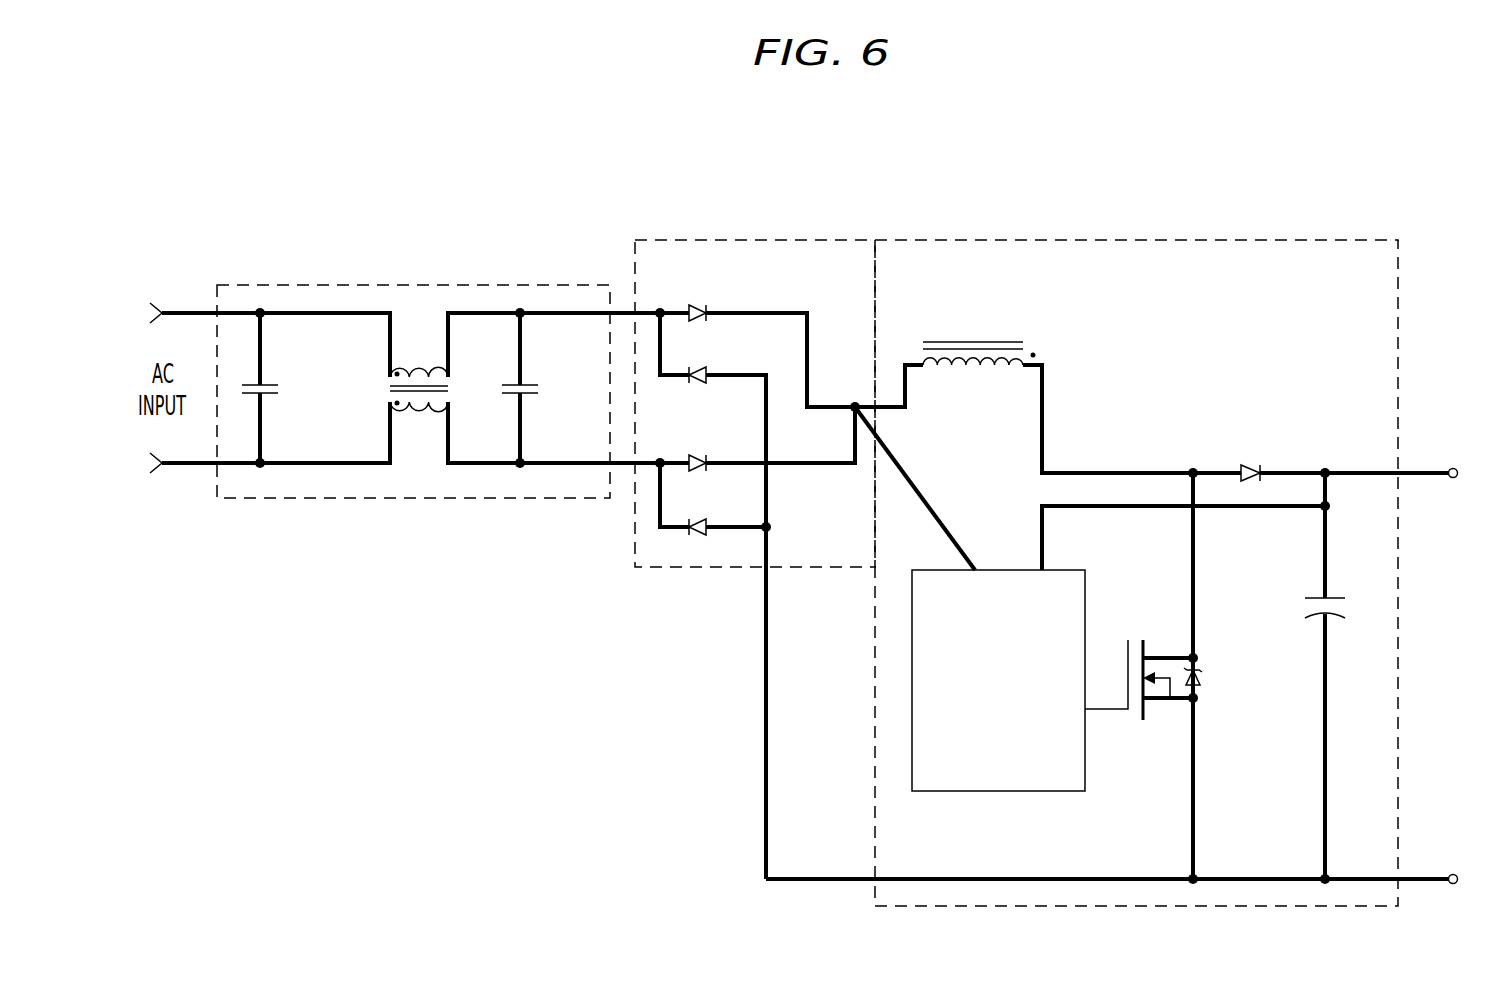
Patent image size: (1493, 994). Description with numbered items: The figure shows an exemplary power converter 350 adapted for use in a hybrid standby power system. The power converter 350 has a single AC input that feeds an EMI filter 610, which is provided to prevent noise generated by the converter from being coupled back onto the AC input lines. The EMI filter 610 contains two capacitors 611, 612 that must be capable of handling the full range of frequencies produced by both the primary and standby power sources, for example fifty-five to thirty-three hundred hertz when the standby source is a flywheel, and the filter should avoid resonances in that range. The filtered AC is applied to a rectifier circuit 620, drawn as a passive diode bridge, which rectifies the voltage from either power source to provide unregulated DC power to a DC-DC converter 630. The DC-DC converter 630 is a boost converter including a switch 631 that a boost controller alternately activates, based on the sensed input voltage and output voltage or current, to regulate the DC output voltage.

The power converter 350 is at (1338, 203).
The EMI filter 610 is at (411, 359).
The capacitor 611 is at (280, 392).
The capacitor 612 is at (540, 392).
The rectifier circuit 620 is at (770, 240).
The DC-DC converter 630 is at (1374, 282).
The switch 631 is at (1178, 706).